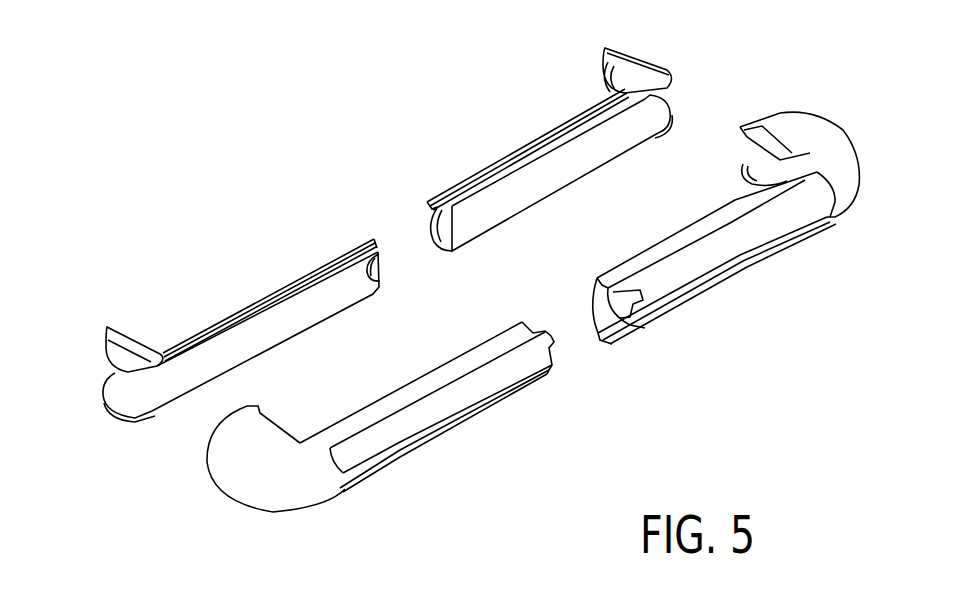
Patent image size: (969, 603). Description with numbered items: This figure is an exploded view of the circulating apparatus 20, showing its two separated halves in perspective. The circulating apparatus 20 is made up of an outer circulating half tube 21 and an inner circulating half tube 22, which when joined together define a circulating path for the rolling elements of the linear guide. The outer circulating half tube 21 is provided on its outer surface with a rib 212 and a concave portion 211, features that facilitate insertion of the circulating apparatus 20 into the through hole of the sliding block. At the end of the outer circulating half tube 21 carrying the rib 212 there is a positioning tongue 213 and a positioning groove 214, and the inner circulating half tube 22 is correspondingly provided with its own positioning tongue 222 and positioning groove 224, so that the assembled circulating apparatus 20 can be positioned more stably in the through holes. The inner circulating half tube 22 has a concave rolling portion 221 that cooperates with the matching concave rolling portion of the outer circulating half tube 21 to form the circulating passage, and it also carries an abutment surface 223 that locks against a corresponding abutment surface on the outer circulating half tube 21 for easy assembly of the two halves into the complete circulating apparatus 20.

The circulating apparatus 20 is at (469, 295).
The outer circulating half tube 21 is at (550, 339).
The concave portion 211 is at (407, 427).
The rib 212 is at (463, 362).
The positioning tongue 213 is at (555, 340).
The positioning groove 214 is at (640, 313).
The inner circulating half tube 22 is at (387, 223).
The concave rolling portion 221 is at (333, 300).
The positioning tongue 222 is at (367, 270).
The abutment surface 223 is at (113, 352).
The positioning groove 224 is at (438, 245).